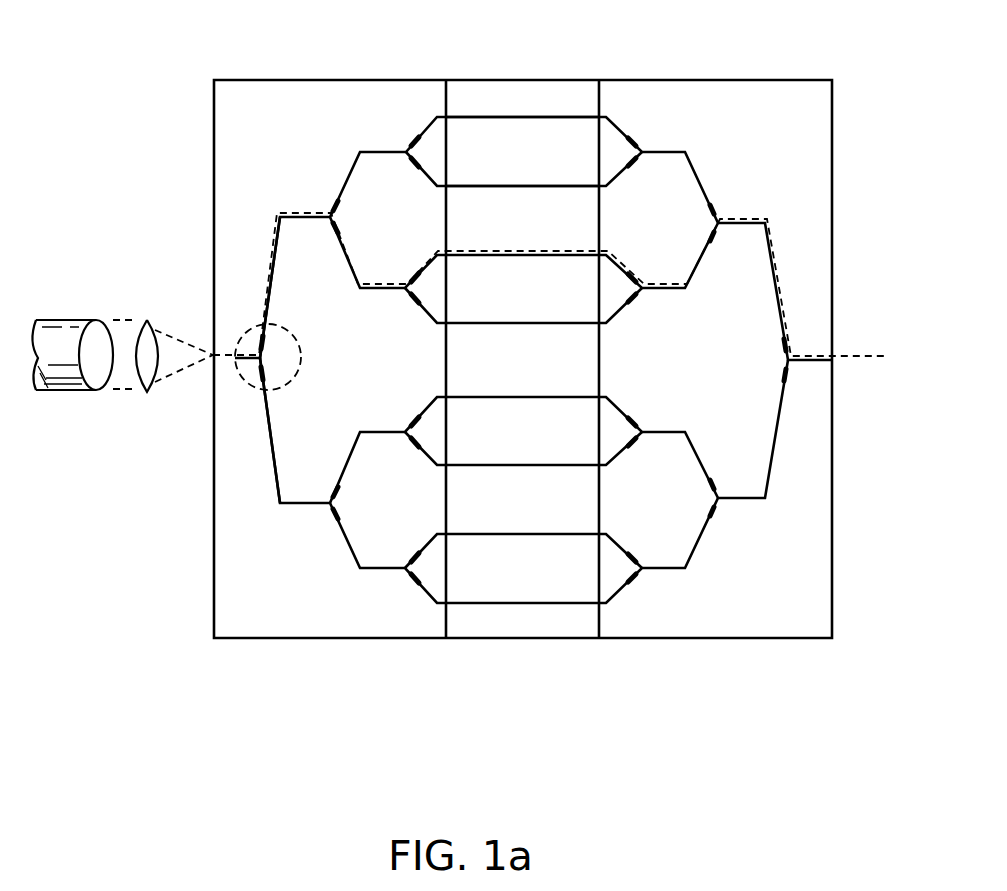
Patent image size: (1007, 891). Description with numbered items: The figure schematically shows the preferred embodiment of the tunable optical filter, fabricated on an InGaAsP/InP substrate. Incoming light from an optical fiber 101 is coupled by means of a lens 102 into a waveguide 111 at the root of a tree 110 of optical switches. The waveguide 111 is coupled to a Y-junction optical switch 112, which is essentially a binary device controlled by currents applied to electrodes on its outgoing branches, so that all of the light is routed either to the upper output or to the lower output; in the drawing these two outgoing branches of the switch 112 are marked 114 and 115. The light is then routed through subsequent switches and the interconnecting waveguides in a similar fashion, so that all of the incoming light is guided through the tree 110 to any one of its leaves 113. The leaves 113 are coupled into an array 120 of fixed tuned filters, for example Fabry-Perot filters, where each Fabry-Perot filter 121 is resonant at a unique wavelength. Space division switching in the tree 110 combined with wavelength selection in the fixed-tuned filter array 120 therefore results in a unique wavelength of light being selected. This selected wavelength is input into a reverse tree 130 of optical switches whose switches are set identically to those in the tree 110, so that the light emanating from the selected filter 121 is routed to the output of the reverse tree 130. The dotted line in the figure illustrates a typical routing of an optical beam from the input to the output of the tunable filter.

The optical fiber 101 is at (63, 320).
The lens 102 is at (154, 328).
The tree of optical switches 110 is at (330, 80).
The waveguide 111 is at (378, 149).
The Y-junction optical switch 112 is at (302, 357).
The leaves of the tree 113 is at (430, 165).
The upper branch waveguide 114 is at (263, 337).
The lower branch waveguide 115 is at (262, 376).
The array of fixed tuned filters 120 is at (517, 80).
The Fabry-Perot filter 121 is at (522, 134).
The reverse tree of optical switches 130 is at (701, 80).